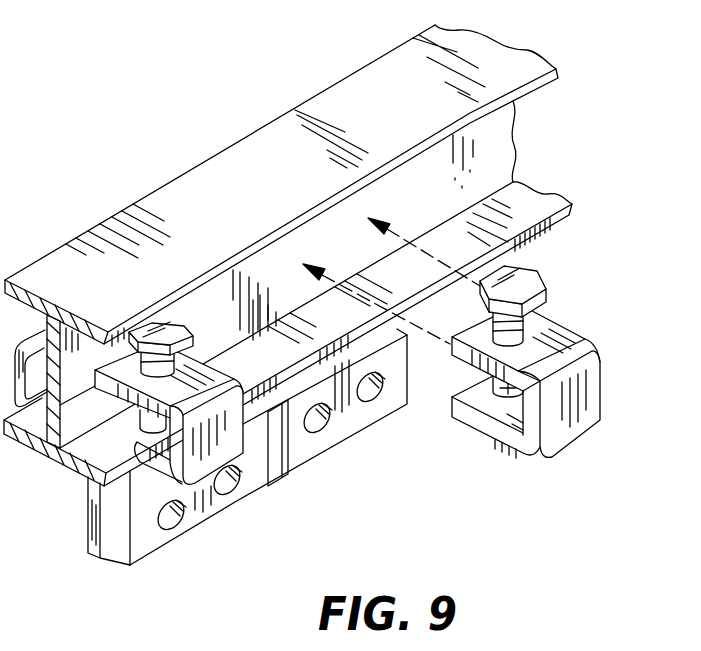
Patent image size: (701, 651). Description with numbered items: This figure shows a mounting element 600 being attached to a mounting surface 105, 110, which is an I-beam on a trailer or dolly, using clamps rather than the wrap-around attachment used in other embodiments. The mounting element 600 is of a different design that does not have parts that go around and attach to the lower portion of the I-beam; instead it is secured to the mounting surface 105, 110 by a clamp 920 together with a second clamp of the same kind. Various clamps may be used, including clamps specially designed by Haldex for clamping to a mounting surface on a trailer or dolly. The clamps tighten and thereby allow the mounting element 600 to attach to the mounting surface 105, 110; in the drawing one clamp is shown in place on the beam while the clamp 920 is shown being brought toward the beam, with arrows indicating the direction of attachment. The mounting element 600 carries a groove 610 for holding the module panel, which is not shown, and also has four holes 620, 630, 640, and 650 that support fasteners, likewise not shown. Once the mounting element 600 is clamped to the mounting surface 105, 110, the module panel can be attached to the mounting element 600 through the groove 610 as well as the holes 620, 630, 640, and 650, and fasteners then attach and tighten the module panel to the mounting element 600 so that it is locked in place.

The mounting surface 105 is at (288, 255).
The mounting surface 110 is at (227, 187).
The mounting element 600 is at (307, 447).
The groove 610 is at (113, 522).
The hole 620 is at (175, 531).
The hole 630 is at (228, 496).
The hole 640 is at (330, 433).
The hole 650 is at (383, 392).
The clamp 920 is at (560, 413).